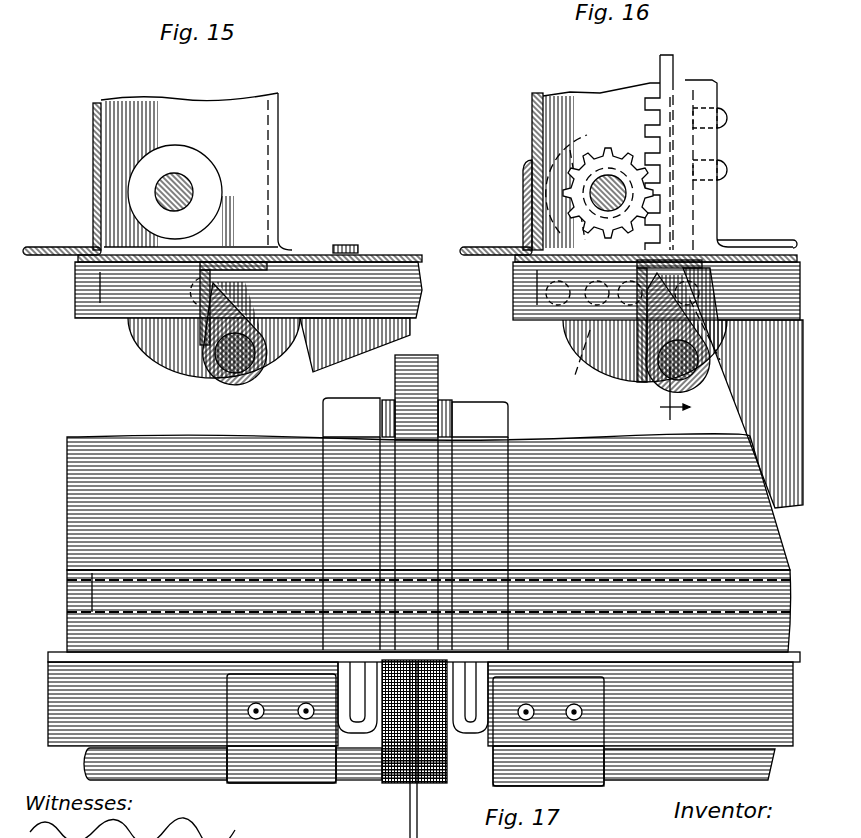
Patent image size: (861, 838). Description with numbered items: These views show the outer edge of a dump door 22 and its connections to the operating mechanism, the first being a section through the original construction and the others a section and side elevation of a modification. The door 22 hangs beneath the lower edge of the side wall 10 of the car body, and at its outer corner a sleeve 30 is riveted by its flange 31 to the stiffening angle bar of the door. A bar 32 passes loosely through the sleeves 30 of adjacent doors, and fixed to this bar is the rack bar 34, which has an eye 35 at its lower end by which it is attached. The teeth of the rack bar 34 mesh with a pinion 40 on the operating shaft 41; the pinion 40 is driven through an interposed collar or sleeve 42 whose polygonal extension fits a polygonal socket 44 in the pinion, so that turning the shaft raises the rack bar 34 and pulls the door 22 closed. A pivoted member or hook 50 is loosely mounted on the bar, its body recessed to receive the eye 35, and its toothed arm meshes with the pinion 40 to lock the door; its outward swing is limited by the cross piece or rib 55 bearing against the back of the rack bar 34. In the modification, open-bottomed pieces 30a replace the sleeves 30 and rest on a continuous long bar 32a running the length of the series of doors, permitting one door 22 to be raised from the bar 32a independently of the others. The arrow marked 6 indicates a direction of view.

In FIG. 15, the side wall 10 is at (98, 115).
In FIG. 15, the operating shaft 41 is at (192, 193).
In FIG. 15, the collar or sleeve 42 is at (193, 167).
In FIG. 15, the pivoted member or hook 50 is at (153, 347).
In FIG. 16, the pivoted member or hook 50 is at (595, 348).
In FIG. 17, the pivoted member or hook 50 is at (378, 768).
In FIG. 15, the flange 31 is at (203, 325).
In FIG. 15, the sleeve 30 is at (263, 363).
In FIG. 15, the bar 32 is at (230, 367).
In FIG. 16, the pinion 40 is at (530, 113).
In FIG. 16, the polygonal socket 44 is at (523, 160).
In FIG. 16, the rack bar 34 is at (665, 60).
In FIG. 17, the rack bar 34 is at (440, 365).
In FIG. 16, the pinion gear (view arrow) 6 is at (635, 247).
In FIG. 16, the dump door 22 is at (760, 253).
In FIG. 16, the cross piece or rib 55 is at (710, 352).
In FIG. 16, the open-bottomed piece 30a is at (697, 377).
In FIG. 17, the open-bottomed piece 30a is at (268, 768).
In FIG. 16, the long bar 32a is at (653, 377).
In FIG. 17, the long bar 32a is at (359, 768).
In FIG. 17, the eye 35 is at (413, 783).